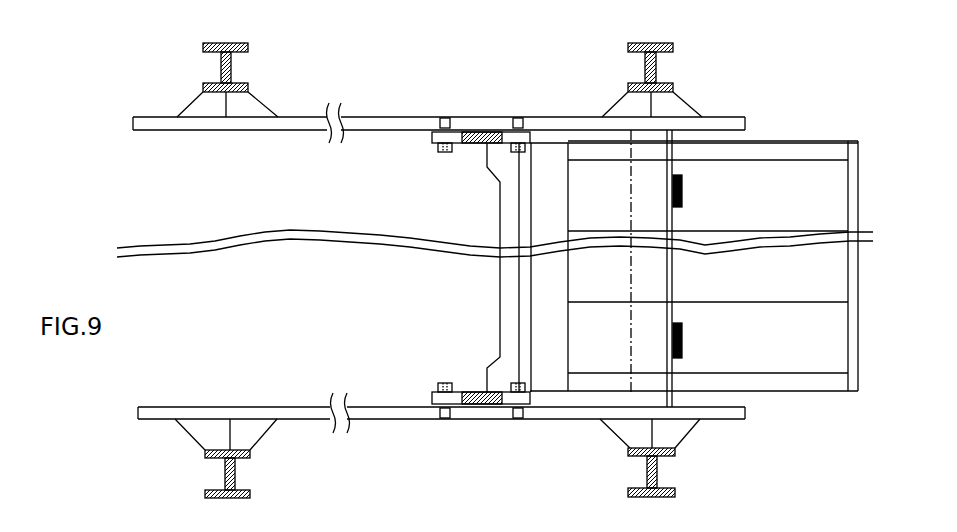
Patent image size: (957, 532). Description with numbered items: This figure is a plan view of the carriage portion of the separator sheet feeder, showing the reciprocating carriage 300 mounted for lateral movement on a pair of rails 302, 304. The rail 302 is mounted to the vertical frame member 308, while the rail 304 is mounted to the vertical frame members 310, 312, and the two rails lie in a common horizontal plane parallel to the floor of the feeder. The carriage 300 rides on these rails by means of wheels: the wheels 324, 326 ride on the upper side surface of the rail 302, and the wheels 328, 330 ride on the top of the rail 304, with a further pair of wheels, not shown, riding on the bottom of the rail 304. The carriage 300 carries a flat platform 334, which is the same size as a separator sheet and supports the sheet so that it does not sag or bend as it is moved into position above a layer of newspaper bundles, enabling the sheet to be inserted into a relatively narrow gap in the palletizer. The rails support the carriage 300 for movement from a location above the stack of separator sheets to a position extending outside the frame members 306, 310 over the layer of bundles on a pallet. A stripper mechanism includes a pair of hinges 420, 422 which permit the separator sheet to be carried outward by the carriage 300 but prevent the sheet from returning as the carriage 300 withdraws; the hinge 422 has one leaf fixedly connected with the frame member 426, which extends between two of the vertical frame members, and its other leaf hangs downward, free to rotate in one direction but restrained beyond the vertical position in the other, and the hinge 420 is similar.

The reciprocating carriage 300 is at (794, 396).
The rail 302 is at (138, 413).
The rail 304 is at (158, 124).
The frame member 306 is at (676, 492).
The vertical frame member 308 is at (225, 500).
The vertical frame member 310 is at (657, 43).
The vertical frame member 312 is at (235, 43).
The wheel 324 is at (522, 426).
The wheel 326 is at (445, 426).
The wheel 328 is at (517, 117).
The wheel 330 is at (445, 118).
The platform 334 is at (792, 138).
The hinge 420 is at (690, 192).
The hinge 422 is at (692, 340).
The frame member 426 is at (667, 268).